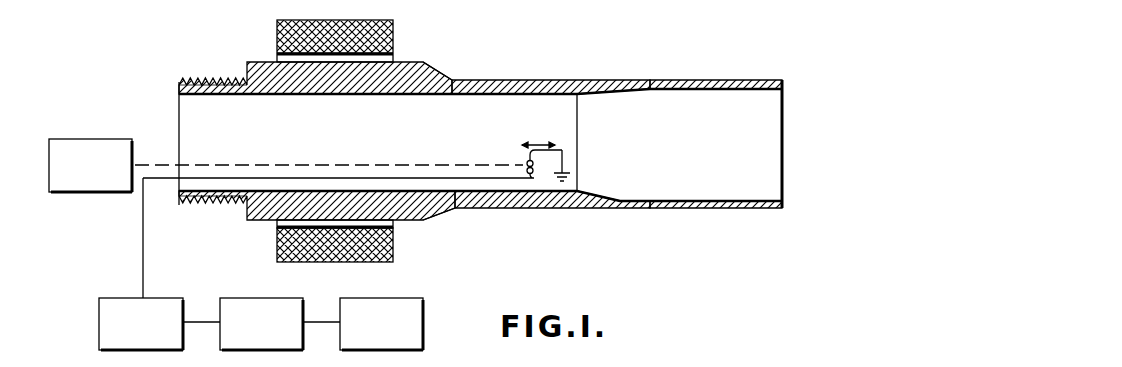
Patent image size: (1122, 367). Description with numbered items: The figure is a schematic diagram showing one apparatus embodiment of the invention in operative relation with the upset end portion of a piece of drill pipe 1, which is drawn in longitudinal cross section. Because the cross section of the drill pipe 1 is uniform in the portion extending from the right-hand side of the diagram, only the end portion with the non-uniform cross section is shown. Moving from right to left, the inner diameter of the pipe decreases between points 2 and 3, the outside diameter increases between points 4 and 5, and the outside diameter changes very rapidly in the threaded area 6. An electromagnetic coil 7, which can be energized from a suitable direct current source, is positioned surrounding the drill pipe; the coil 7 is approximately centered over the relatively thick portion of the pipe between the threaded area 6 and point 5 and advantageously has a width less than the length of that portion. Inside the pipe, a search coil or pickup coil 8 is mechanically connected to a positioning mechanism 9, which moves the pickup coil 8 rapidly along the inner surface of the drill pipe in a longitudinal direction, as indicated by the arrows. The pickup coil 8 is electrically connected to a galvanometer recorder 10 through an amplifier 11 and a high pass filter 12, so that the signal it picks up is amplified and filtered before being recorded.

The drill pipe 1 is at (176, 105).
The point 2 is at (664, 93).
The point 3 is at (579, 97).
The point 4 is at (458, 80).
The point 5 is at (425, 66).
The threaded area 6 is at (225, 78).
The electromagnetic coil 7 is at (395, 33).
The pickup coil 8 is at (528, 162).
The positioning mechanism 9 is at (98, 135).
The galvanometer recorder 10 is at (394, 297).
The amplifier 11 is at (153, 297).
The high pass filter 12 is at (259, 297).